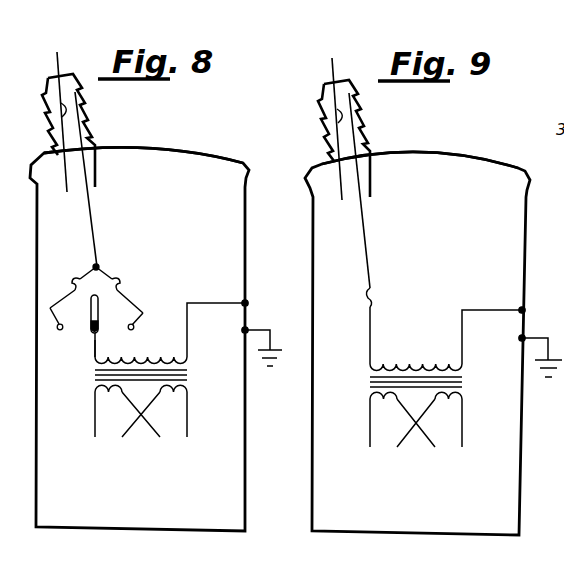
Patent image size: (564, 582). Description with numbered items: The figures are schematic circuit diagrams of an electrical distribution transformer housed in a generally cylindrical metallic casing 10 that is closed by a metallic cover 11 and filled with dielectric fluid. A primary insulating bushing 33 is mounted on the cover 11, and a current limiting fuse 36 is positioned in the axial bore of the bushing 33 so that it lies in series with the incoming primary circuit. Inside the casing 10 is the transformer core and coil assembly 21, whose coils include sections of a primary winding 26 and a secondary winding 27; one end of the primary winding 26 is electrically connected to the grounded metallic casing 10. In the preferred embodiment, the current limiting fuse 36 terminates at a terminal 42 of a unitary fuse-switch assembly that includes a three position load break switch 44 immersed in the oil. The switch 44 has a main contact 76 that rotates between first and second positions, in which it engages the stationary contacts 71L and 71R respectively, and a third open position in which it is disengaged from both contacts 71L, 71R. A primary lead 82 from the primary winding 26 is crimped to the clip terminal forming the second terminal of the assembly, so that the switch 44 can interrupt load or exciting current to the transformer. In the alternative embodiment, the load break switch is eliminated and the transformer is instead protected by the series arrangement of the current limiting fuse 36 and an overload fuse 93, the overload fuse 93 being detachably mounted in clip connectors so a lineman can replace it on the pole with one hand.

In FIG. 8, the casing 10 is at (247, 490).
In FIG. 9, the casing 10 is at (520, 495).
In FIG. 8, the cover 11 is at (203, 150).
In FIG. 9, the cover 11 is at (484, 158).
In FIG. 8, the primary insulating bushing 33 is at (46, 117).
In FIG. 9, the primary insulating bushing 33 is at (322, 121).
In FIG. 8, the current limiting fuse 36 is at (81, 95).
In FIG. 9, the current limiting fuse 36 is at (358, 100).
In FIG. 8, the terminal 42 is at (99, 265).
In FIG. 8, the three position load break switch 44 is at (72, 264).
In FIG. 8, the overload fuse 93 is at (71, 281).
In FIG. 9, the overload fuse 93 is at (377, 294).
In FIG. 8, the stationary contact 71L is at (58, 330).
In FIG. 8, the stationary contact 71R is at (134, 330).
In FIG. 8, the main contact 76 is at (99, 312).
In FIG. 8, the primary lead 82 is at (93, 343).
In FIG. 8, the primary winding 26 is at (190, 362).
In FIG. 9, the primary winding 26 is at (466, 368).
In FIG. 8, the transformer core and coil assembly 21 is at (224, 382).
In FIG. 9, the transformer core and coil assembly 21 is at (499, 387).
In FIG. 8, the secondary winding 27 is at (188, 390).
In FIG. 9, the secondary winding 27 is at (464, 396).